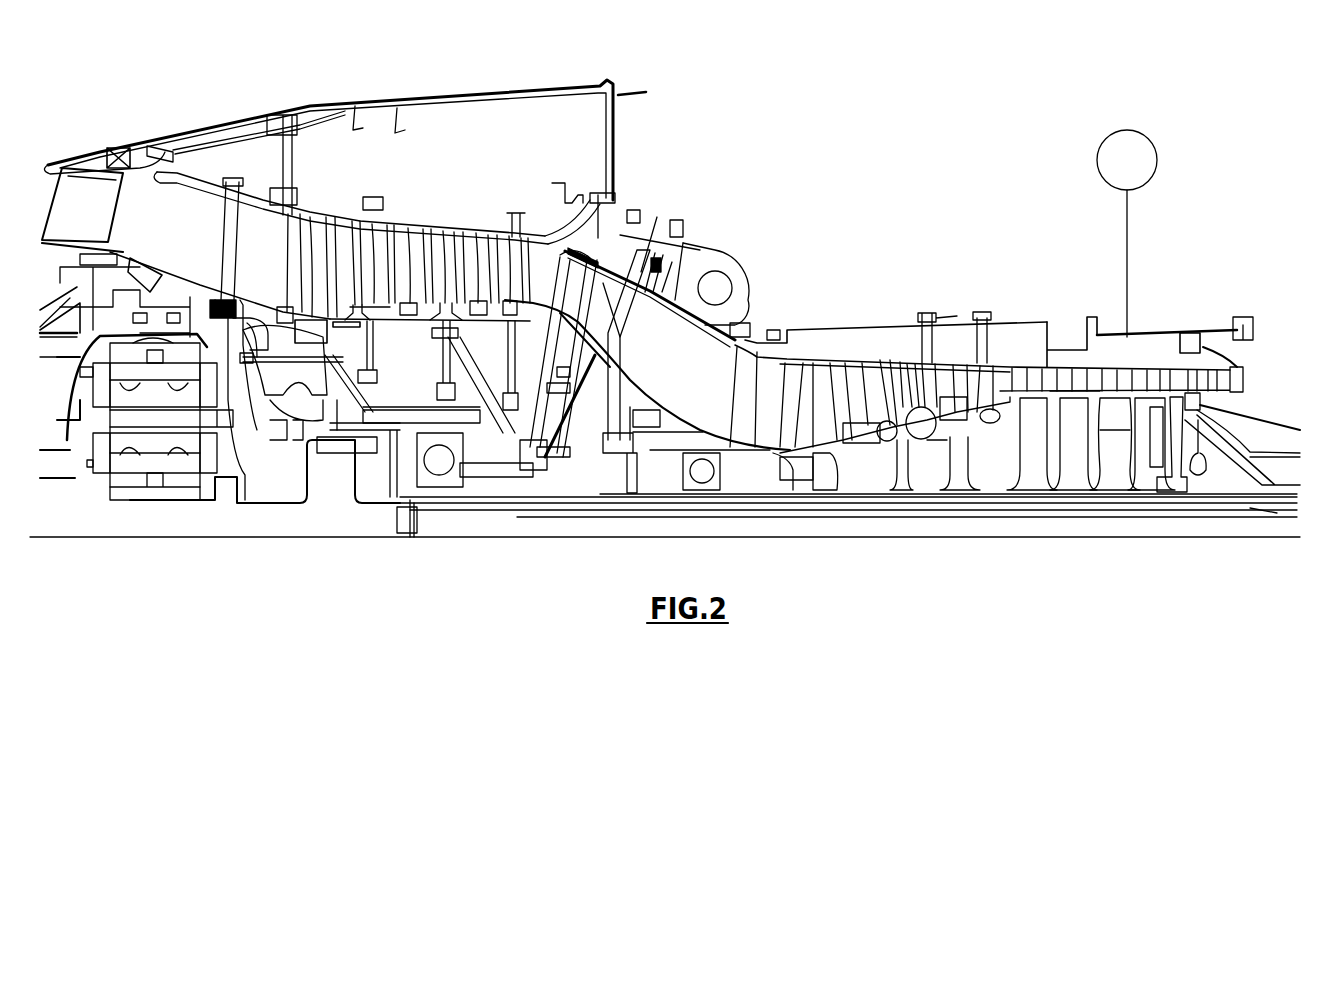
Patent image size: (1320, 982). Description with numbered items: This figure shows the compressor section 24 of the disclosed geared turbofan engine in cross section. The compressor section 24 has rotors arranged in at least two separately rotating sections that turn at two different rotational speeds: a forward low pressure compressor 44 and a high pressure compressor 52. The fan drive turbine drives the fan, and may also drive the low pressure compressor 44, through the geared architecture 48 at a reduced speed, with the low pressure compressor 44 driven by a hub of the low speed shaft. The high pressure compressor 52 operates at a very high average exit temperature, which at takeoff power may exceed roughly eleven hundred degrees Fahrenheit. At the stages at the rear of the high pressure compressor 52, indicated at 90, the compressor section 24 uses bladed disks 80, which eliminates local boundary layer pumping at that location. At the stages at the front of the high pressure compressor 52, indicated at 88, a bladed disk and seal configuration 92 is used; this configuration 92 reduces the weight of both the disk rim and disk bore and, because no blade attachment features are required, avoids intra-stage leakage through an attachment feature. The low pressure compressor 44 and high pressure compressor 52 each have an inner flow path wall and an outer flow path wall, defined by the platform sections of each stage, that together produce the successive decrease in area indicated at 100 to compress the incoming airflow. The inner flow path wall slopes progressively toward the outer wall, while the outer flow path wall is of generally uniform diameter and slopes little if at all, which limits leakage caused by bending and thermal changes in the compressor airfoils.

The compressor section 24 is at (852, 162).
The low pressure compressor 44 is at (444, 192).
The geared architecture 48 is at (150, 505).
The high pressure compressor 52 is at (1015, 351).
The bladed disks 80 is at (1090, 403).
The front stage location of high pressure compressor 88 is at (933, 456).
The rear stage location of high pressure compressor 90 is at (1115, 423).
The bladed disk and seal configuration 92 is at (909, 410).
The successive decrease in flow path area 100 is at (1073, 360).